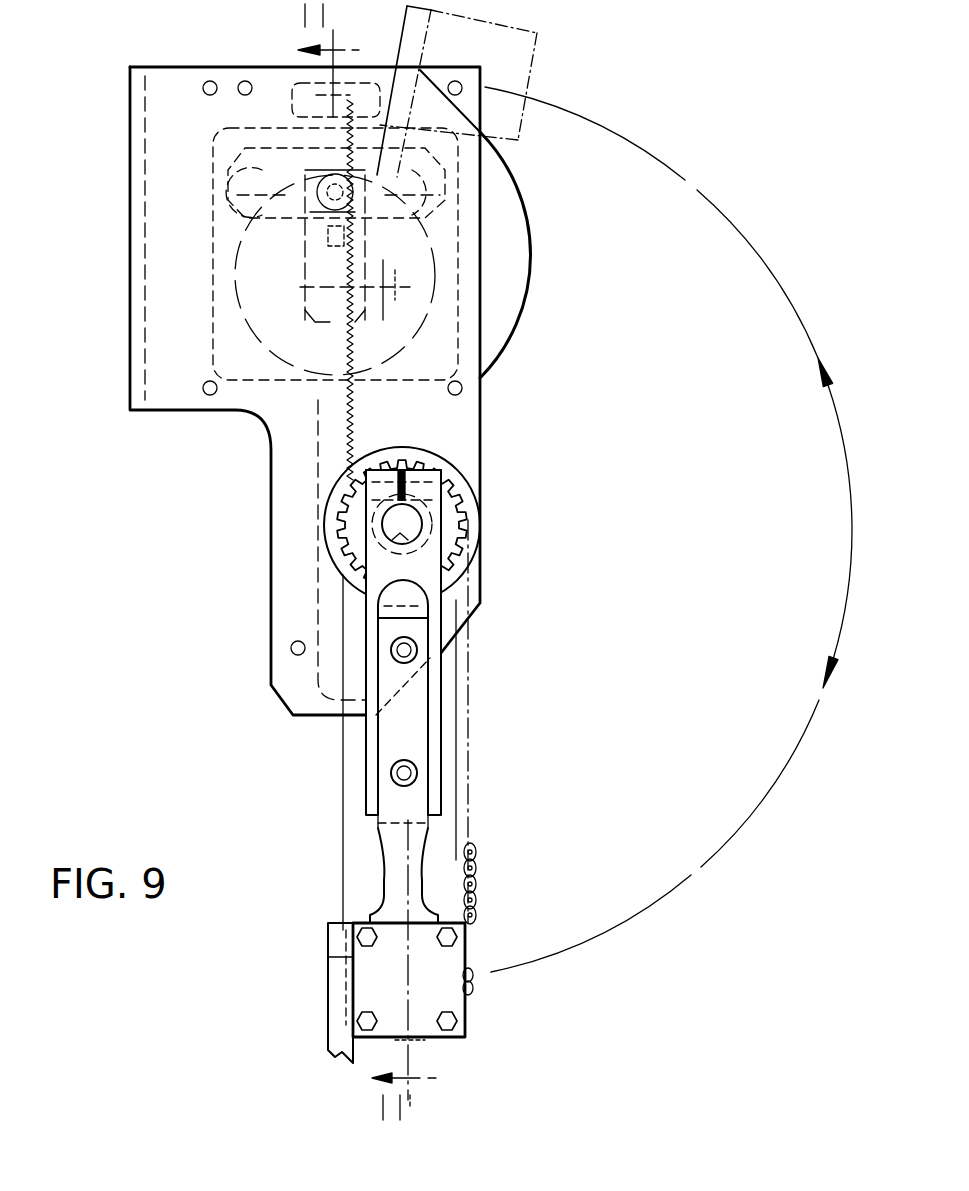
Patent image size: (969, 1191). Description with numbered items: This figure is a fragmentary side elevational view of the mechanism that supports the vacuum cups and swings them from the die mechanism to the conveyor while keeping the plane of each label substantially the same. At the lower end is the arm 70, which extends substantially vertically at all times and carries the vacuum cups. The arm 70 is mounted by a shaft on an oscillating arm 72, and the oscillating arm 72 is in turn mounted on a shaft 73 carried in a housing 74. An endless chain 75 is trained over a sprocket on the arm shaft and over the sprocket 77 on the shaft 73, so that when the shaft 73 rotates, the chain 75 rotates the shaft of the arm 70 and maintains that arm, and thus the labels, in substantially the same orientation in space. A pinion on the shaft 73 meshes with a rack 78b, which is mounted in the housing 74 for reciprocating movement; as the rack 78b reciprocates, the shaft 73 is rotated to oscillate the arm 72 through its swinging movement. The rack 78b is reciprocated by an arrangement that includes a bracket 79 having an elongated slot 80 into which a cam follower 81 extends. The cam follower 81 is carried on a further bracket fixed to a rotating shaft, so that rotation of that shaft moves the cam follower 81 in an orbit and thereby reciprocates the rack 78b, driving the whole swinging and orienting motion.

The arm 70 is at (335, 992).
The oscillating arm 72 is at (380, 826).
The shaft 73 is at (440, 551).
The housing 74 is at (284, 465).
The endless chain 75 is at (478, 880).
The sprocket 77 is at (462, 488).
The rack 78b is at (345, 412).
The bracket 79 is at (458, 165).
The elongated slot 80 is at (445, 208).
The cam follower 81 is at (302, 247).